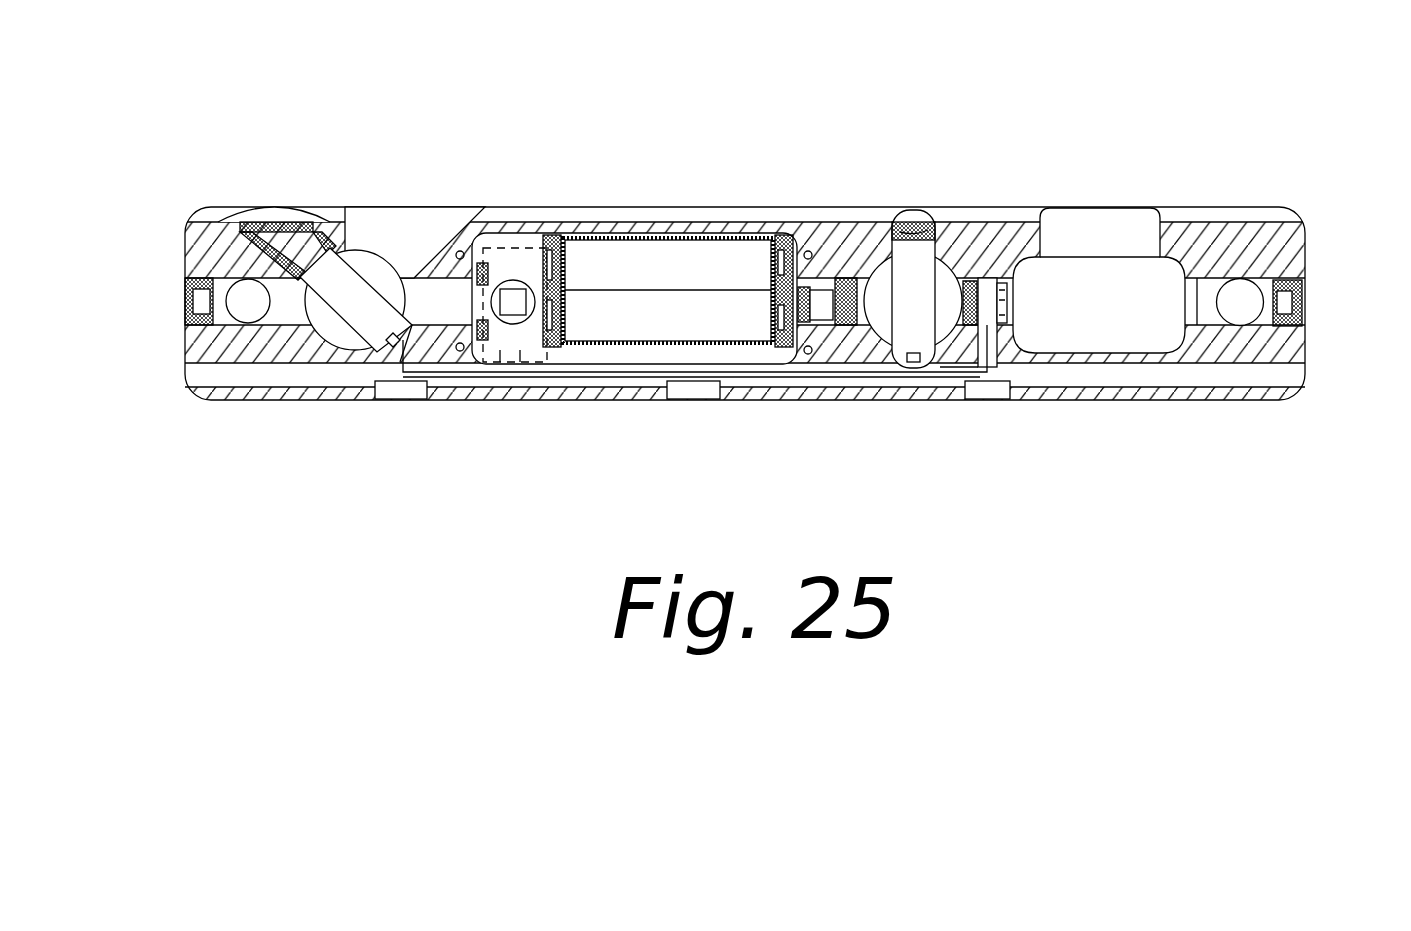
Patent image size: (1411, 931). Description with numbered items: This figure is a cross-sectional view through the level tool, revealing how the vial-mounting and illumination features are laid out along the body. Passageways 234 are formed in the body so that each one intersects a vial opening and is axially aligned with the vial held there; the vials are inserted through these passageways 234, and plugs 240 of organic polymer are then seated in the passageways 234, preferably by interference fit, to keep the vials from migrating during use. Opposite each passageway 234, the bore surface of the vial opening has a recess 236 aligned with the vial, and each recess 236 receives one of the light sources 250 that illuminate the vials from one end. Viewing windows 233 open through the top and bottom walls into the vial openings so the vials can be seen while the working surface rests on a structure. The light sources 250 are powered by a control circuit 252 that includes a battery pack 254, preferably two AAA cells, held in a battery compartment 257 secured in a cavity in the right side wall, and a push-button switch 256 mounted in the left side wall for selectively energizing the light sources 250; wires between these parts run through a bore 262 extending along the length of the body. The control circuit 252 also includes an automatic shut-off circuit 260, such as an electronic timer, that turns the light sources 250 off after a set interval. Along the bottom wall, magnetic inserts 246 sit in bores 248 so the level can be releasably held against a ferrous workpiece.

The viewing window 233 is at (400, 228).
The passageway 234 is at (303, 230).
The recess 236 is at (383, 350).
The plug 240 is at (195, 283).
The magnetic insert 246 is at (405, 390).
The bore 248 is at (387, 392).
The light source 250 is at (390, 345).
The control circuit 252 is at (680, 268).
The battery pack 254 is at (595, 323).
The switch 256 is at (513, 302).
The battery compartment 257 is at (770, 350).
The automatic shut-off circuit 260 is at (500, 262).
The bore 262 is at (1275, 372).